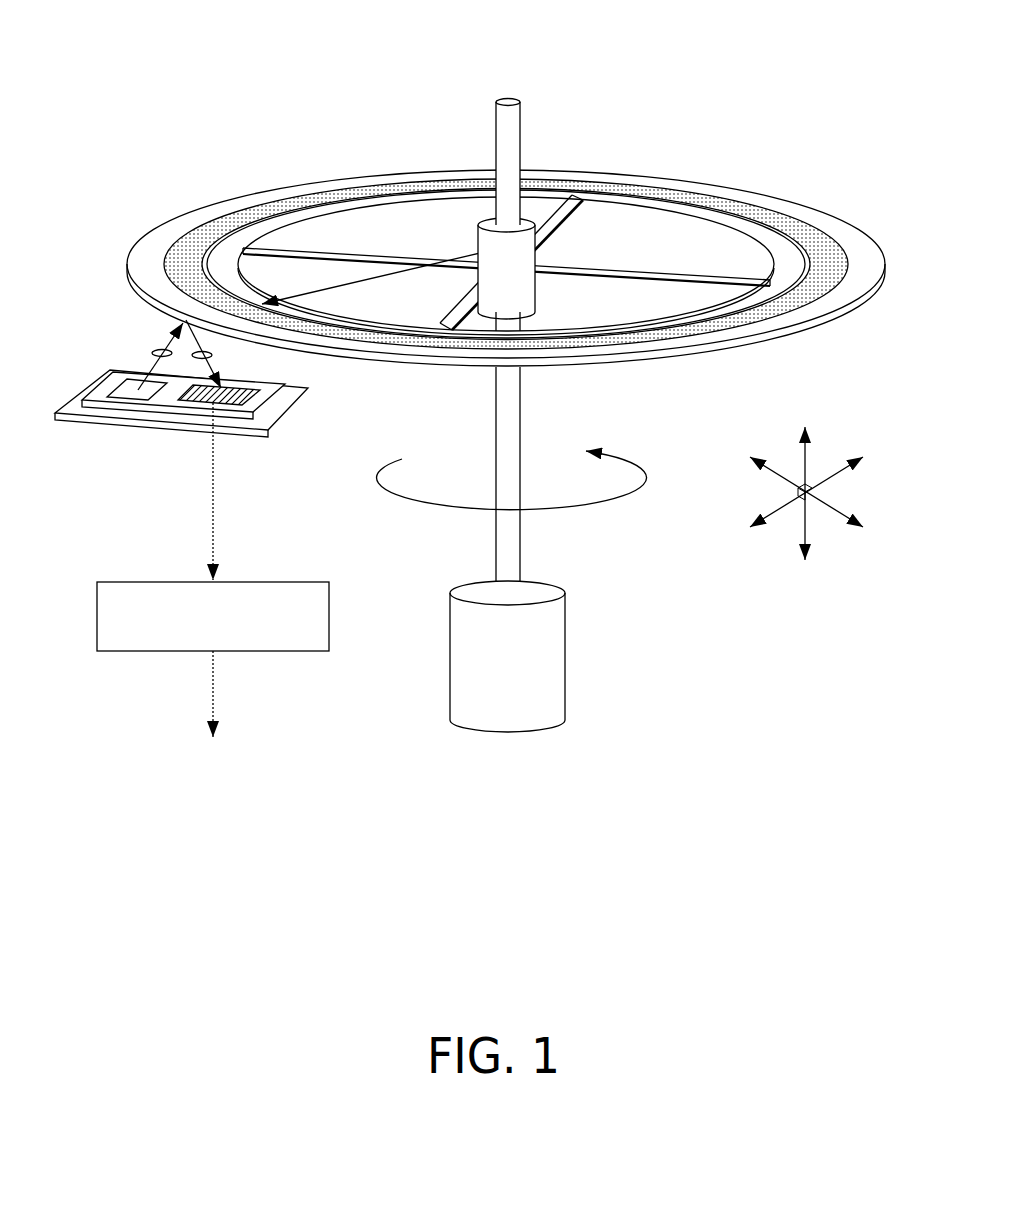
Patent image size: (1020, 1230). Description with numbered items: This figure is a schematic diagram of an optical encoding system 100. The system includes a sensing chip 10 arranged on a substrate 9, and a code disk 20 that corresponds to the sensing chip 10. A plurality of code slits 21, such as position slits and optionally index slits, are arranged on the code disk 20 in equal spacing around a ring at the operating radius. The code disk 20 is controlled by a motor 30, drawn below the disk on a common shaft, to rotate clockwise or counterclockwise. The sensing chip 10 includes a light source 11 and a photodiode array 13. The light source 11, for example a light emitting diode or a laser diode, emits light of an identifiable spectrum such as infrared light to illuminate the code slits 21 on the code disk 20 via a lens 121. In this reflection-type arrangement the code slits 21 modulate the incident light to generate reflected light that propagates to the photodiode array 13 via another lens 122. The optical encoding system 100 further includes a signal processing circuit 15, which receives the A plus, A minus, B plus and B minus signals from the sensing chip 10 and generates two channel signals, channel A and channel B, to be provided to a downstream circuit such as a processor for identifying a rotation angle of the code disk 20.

The optical encoding system 100 is at (172, 41).
The substrate 9 is at (148, 423).
The sensing chip 10 is at (90, 403).
The light source 11 is at (127, 380).
The lens 121 is at (153, 352).
The another lens 122 is at (212, 354).
The photodiode array 13 is at (250, 397).
The signal processing circuit 15 is at (329, 615).
The code disk 20 is at (840, 232).
The code slits 21 is at (778, 210).
The motor 30 is at (557, 660).